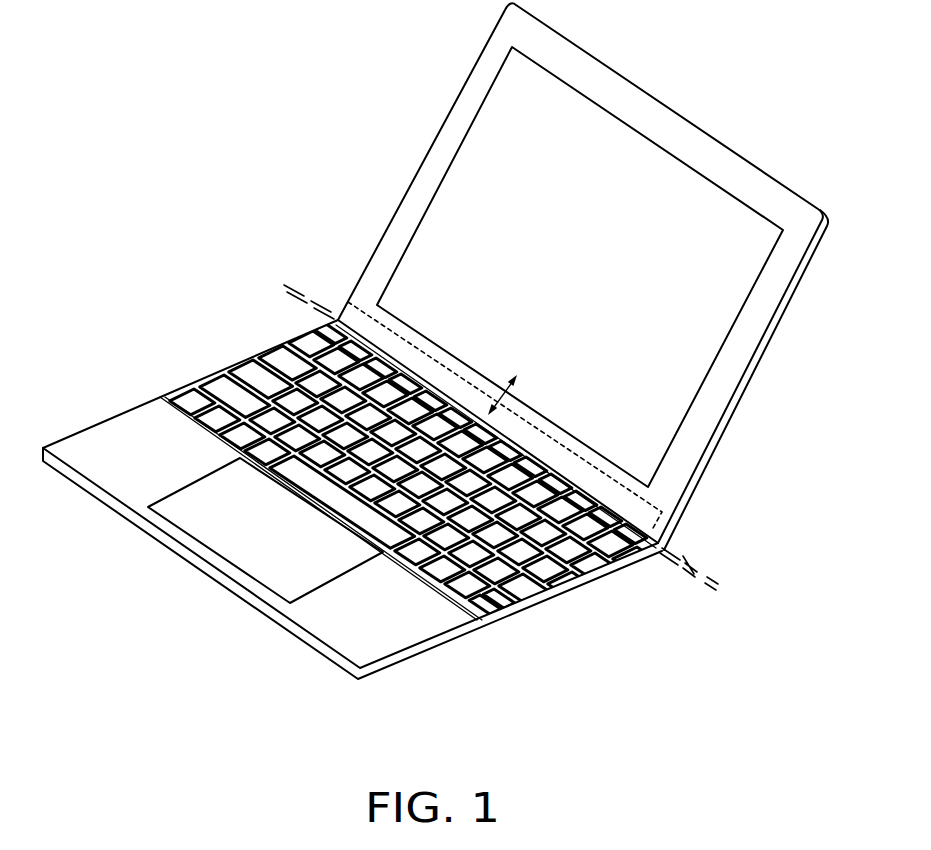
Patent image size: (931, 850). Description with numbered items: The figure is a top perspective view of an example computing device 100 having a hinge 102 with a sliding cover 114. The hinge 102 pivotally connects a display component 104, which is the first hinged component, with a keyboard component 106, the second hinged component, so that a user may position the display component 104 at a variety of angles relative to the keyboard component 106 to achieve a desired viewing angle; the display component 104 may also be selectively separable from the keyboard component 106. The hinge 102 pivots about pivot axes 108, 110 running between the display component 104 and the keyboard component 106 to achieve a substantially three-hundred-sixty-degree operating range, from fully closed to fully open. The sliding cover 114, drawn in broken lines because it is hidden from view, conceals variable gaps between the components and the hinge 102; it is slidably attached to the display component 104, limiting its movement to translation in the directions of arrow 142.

The computing device 100 is at (332, 120).
The hinge 102 is at (666, 560).
The display component 104 is at (610, 286).
The keyboard component 106 is at (290, 532).
The pivot axis 108 is at (690, 560).
The pivot axis 110 is at (696, 572).
The sliding cover 114 is at (447, 362).
The arrow 142 is at (505, 395).